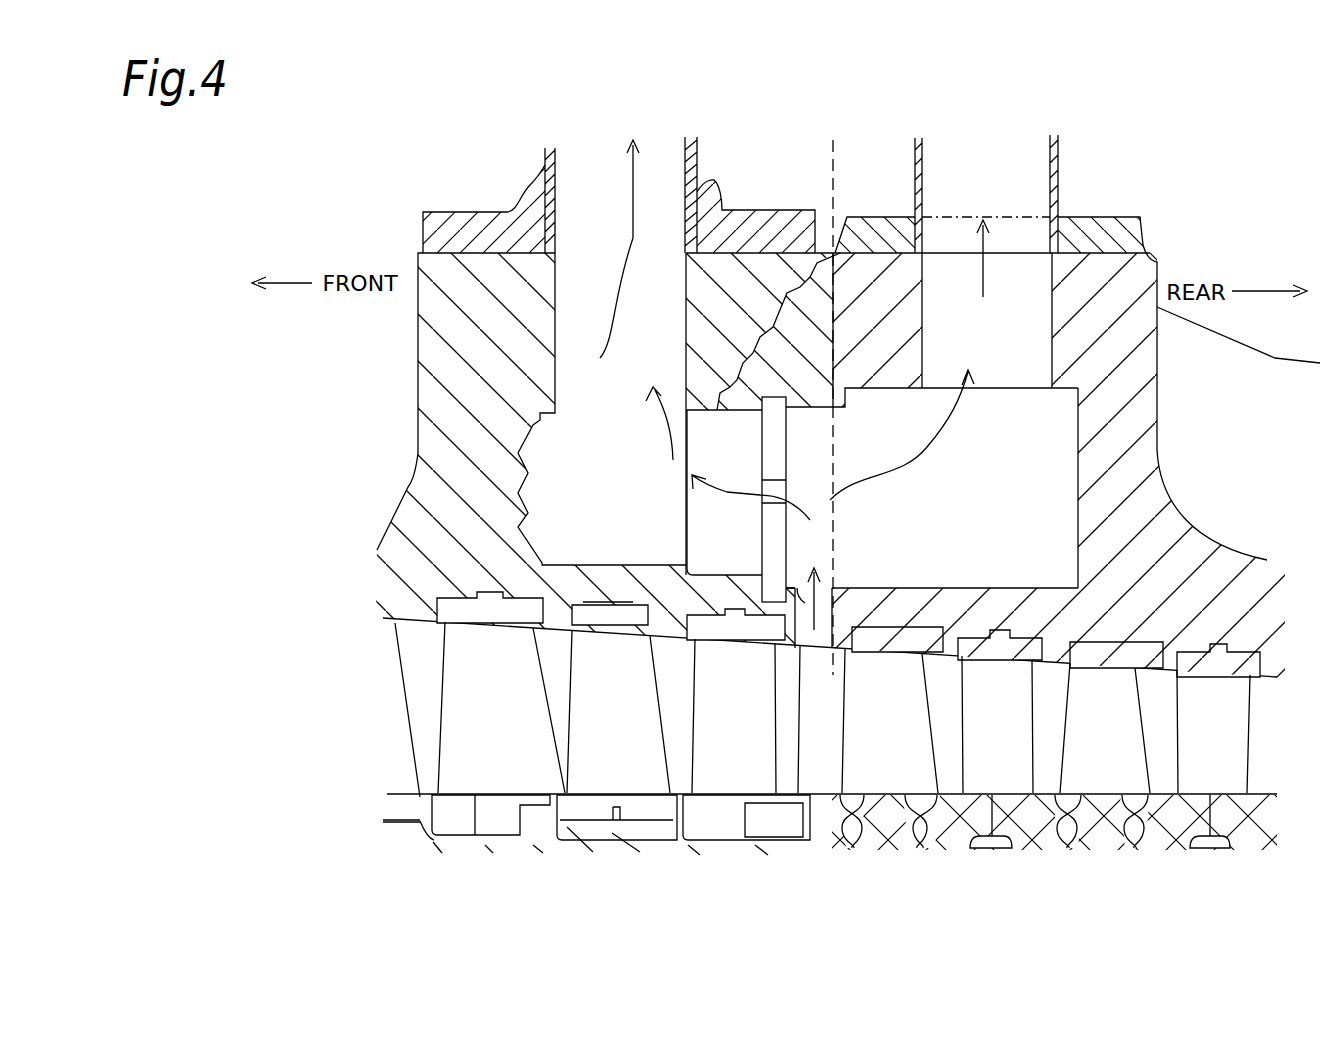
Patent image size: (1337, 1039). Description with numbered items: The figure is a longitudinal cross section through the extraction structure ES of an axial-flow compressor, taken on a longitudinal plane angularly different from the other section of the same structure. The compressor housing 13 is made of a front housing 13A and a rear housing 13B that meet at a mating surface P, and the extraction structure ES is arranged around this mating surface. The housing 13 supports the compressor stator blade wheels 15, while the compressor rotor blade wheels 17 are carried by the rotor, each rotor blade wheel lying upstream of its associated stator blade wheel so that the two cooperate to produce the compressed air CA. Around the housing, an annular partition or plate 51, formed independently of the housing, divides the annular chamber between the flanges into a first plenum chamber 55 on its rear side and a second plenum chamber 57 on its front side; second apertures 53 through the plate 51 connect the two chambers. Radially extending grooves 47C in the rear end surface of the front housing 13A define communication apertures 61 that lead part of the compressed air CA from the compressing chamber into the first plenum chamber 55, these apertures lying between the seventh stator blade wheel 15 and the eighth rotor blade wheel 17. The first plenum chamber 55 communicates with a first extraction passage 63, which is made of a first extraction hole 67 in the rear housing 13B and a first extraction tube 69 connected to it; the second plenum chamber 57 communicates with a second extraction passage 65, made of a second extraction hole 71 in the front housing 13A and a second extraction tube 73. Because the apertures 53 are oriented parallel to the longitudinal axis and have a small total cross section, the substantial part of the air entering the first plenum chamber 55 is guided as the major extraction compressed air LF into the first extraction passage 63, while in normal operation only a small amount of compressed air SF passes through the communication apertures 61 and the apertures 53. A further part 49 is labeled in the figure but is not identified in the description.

The compressor housing 13 is at (1140, 222).
The front housing 13A is at (397, 510).
The rear housing 13B is at (1193, 540).
The compressor stator blade wheel 15 is at (707, 765).
The compressor rotor blade wheel 17 is at (917, 777).
The radially extending groove 47C is at (800, 603).
The partition wall 49 is at (1077, 460).
The plate 51 is at (787, 440).
The second apertures 53 is at (788, 488).
The first plenum chamber 55 is at (1017, 544).
The second plenum chamber 57 is at (703, 557).
The communication apertures 61 is at (823, 600).
The first extraction passage 63 is at (1025, 173).
The second extraction passage 65 is at (667, 168).
The first extraction hole 67 is at (1052, 337).
The first extraction tube 69 is at (1060, 146).
The second extraction hole 71 is at (548, 348).
The second extraction tube 73 is at (545, 168).
The mating surface P is at (838, 166).
The extraction structure ES is at (1192, 253).
The major extraction compressed air LF is at (980, 240).
The small amount of compressed air SF is at (652, 410).
The compressed air CA is at (813, 655).